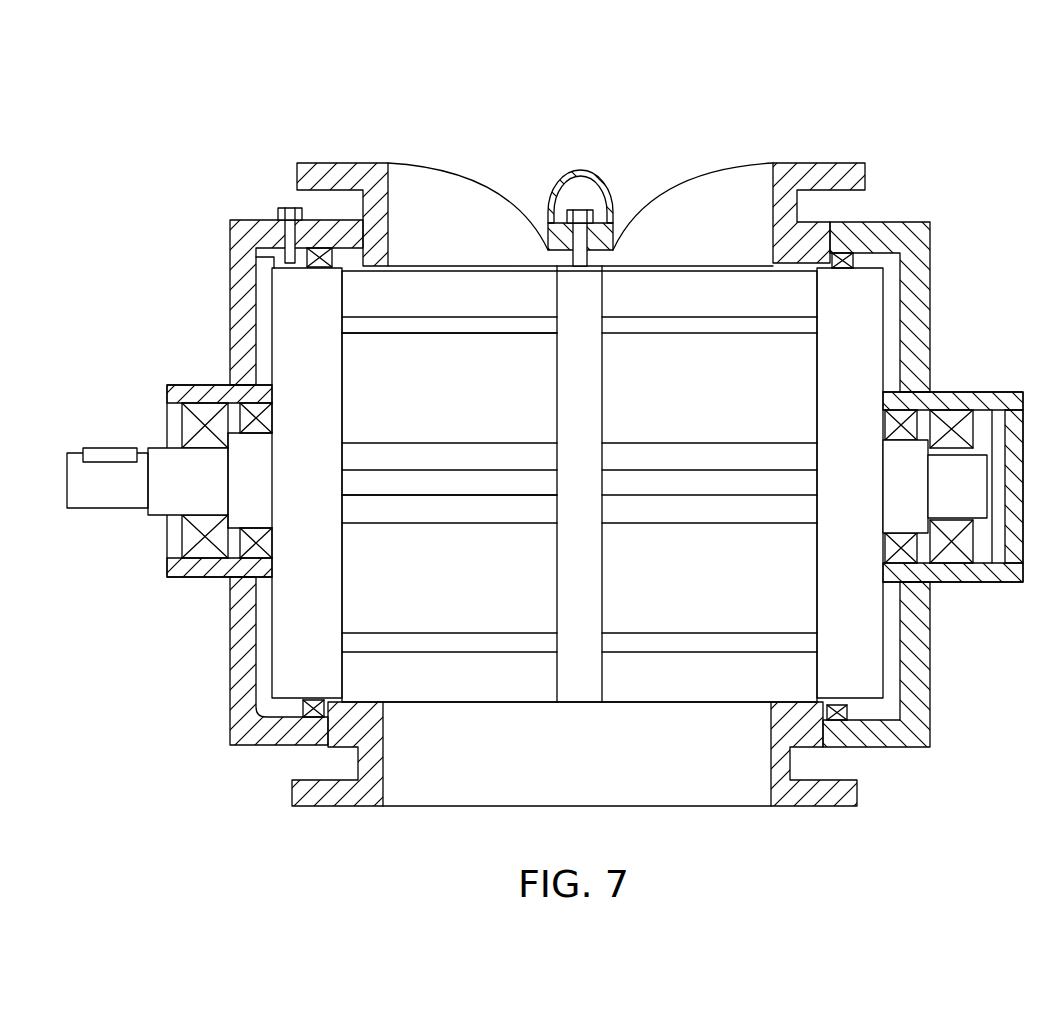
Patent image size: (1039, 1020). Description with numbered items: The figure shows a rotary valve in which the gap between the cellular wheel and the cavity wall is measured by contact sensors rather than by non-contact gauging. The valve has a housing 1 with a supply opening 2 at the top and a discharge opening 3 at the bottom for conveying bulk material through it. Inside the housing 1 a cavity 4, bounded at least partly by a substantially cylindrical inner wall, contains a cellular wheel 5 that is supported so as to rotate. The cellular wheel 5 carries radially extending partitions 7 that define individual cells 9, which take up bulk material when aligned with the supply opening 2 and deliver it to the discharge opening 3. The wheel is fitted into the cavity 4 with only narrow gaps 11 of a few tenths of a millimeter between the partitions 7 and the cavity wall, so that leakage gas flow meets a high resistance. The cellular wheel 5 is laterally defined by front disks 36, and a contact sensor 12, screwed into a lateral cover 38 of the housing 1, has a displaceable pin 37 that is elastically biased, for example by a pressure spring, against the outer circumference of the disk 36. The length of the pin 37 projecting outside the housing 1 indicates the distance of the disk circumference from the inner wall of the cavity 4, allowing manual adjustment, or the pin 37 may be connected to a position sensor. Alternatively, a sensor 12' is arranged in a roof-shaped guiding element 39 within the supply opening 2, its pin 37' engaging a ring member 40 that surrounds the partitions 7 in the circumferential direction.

The housing 1 is at (858, 124).
The supply opening 2 is at (740, 195).
The discharge opening 3 is at (656, 795).
The cavity 4 is at (782, 705).
The cellular wheel 5 is at (657, 606).
The partitions 7 is at (446, 328).
The cells 9 is at (742, 429).
The narrow gaps 11 is at (357, 708).
The contact sensor 12 is at (274, 200).
The contact sensor 12' is at (599, 191).
The front disks 36 is at (285, 650).
The displaceable pin 37 is at (254, 501).
The pin 37' is at (614, 240).
The lateral cover 38 is at (244, 232).
The roof-shaped guiding element 39 is at (582, 168).
The ring member 40 is at (567, 690).